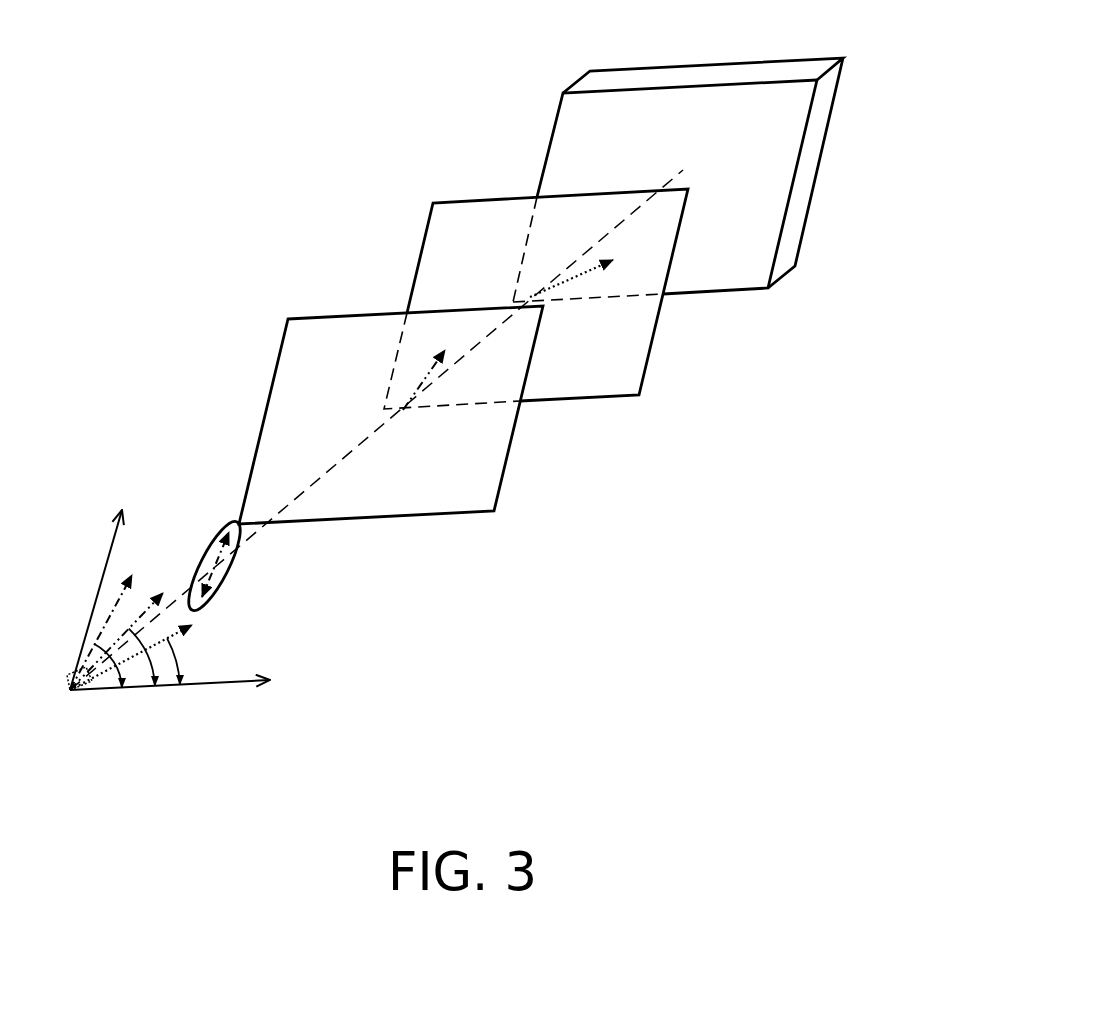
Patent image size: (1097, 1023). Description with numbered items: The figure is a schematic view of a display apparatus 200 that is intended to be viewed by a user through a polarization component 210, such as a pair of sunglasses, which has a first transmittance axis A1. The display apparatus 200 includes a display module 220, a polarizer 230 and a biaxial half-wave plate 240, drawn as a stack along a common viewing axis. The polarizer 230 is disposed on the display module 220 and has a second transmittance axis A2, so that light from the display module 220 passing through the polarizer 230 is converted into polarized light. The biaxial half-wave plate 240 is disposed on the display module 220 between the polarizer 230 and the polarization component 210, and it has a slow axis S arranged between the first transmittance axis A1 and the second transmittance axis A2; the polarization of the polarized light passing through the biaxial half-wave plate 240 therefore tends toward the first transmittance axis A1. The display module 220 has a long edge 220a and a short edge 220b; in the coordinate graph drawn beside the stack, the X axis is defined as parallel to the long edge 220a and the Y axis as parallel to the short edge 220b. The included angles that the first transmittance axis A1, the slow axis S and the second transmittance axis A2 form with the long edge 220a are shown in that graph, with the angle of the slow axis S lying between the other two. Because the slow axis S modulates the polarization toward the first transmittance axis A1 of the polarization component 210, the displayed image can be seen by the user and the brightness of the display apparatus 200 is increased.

The display apparatus 200 is at (832, 768).
The polarization component 210 is at (242, 558).
The display module 220 is at (666, 201).
The long edge 220a is at (722, 282).
The short edge 220b is at (572, 113).
The polarizer 230 is at (648, 368).
The biaxial half-wave plate 240 is at (512, 482).
The first transmittance axis A1 is at (210, 542).
The second transmittance axis A2 is at (359, 467).
The slow axis S is at (257, 504).